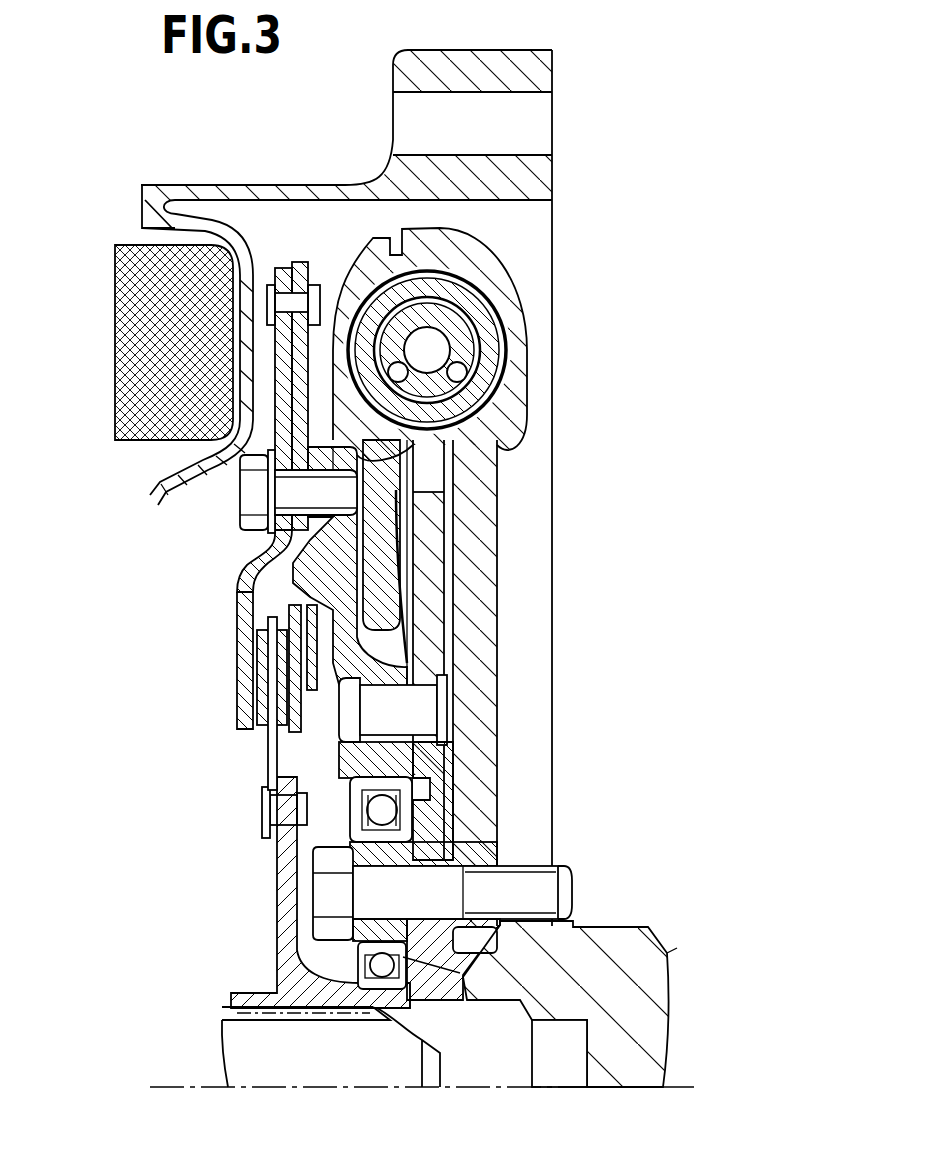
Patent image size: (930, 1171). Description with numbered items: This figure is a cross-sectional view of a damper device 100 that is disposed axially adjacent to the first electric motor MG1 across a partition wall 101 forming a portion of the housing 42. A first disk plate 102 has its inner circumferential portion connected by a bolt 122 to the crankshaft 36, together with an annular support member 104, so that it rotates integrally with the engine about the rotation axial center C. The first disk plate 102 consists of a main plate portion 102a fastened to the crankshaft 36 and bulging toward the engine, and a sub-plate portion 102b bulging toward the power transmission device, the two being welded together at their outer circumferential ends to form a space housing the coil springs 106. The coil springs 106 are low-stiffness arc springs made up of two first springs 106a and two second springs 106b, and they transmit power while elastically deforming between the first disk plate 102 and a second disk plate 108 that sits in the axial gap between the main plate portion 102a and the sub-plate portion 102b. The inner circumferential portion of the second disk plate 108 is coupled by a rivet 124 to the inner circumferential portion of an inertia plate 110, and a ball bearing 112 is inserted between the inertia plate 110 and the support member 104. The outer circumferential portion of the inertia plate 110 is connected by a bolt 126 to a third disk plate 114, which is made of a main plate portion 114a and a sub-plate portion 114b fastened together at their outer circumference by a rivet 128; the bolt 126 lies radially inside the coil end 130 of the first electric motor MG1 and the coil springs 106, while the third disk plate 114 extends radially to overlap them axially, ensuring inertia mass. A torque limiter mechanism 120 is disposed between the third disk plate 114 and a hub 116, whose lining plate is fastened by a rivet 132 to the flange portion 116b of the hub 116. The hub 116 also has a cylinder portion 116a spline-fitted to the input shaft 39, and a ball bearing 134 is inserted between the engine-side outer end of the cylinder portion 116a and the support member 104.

The housing 42 is at (485, 75).
The damper device 100 is at (378, 468).
The coil end 130 is at (135, 375).
The first electric motor MG1 is at (97, 318).
The partition wall 101 is at (182, 462).
The third disk plate 114 is at (233, 437).
The main plate portion 114a is at (247, 600).
The sub-plate portion 114b is at (290, 540).
The rivet 128 is at (300, 308).
The first disk plate 102 is at (488, 577).
The main plate portion 102a is at (470, 610).
The sub-plate portion 102b is at (380, 497).
The second disk plate 108 is at (430, 527).
The coil springs 106 is at (504, 350).
The first springs 106a is at (492, 373).
The second springs 106b is at (462, 332).
The inertia plate 110 is at (347, 555).
The bolt 126 is at (245, 503).
The torque limiter mechanism 120 is at (237, 680).
The rivet 124 is at (412, 703).
The ball bearing 112 is at (386, 812).
The bolt 122 is at (528, 897).
The rivet 132 is at (290, 810).
The hub 116 is at (279, 812).
The cylinder portion 116a is at (290, 998).
The flange portion 116b is at (295, 880).
The ball bearing 134 is at (384, 968).
The support member 104 is at (440, 947).
The crankshaft 36 is at (637, 1030).
The input shaft 39 is at (320, 1068).
The rotation axial center C is at (208, 1090).